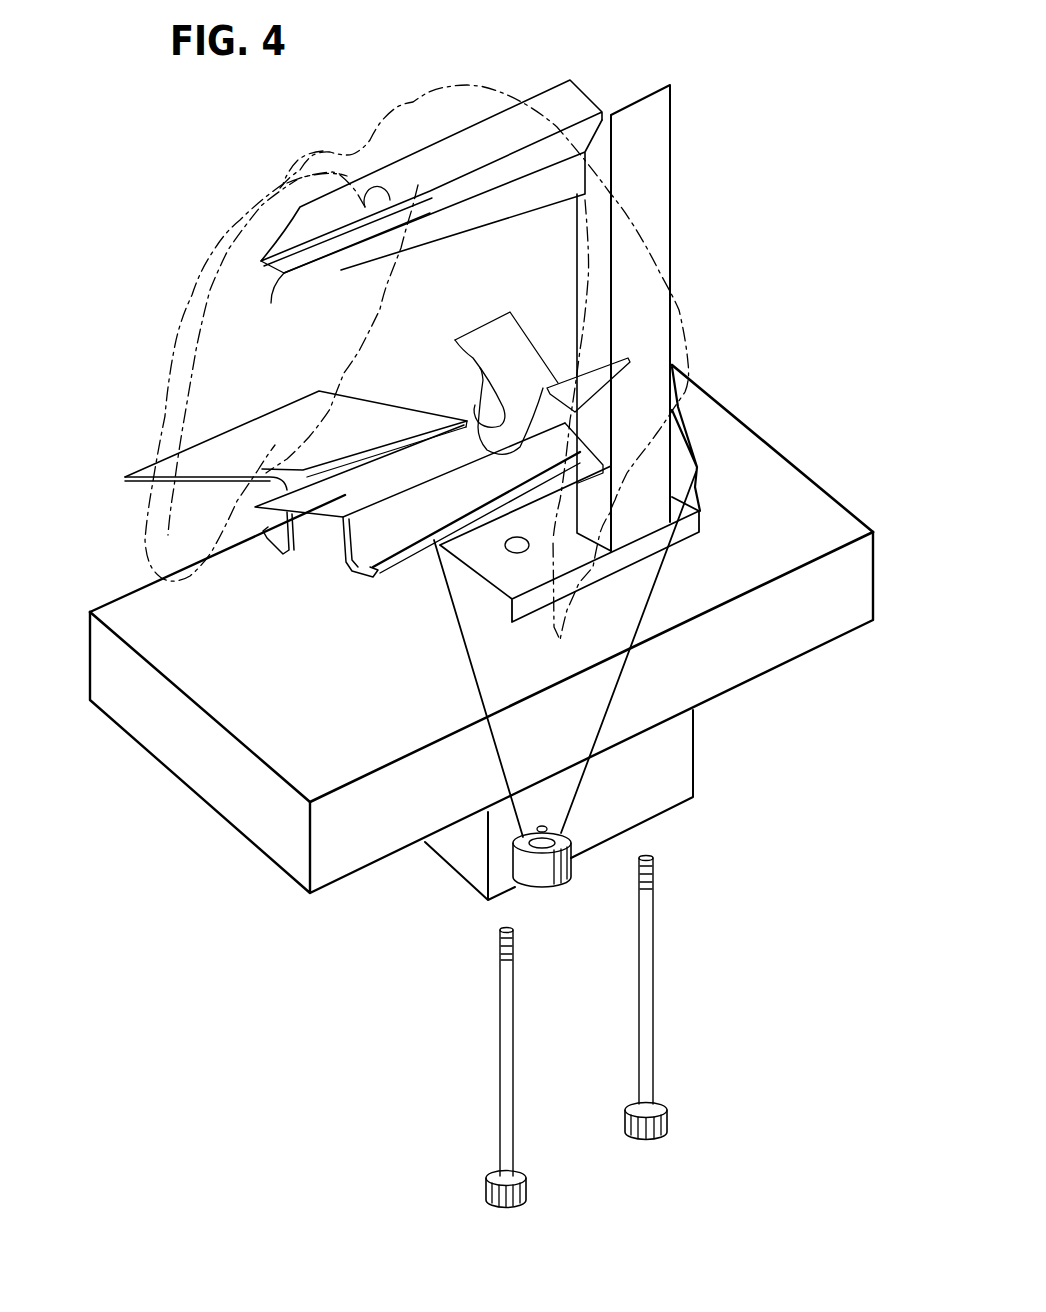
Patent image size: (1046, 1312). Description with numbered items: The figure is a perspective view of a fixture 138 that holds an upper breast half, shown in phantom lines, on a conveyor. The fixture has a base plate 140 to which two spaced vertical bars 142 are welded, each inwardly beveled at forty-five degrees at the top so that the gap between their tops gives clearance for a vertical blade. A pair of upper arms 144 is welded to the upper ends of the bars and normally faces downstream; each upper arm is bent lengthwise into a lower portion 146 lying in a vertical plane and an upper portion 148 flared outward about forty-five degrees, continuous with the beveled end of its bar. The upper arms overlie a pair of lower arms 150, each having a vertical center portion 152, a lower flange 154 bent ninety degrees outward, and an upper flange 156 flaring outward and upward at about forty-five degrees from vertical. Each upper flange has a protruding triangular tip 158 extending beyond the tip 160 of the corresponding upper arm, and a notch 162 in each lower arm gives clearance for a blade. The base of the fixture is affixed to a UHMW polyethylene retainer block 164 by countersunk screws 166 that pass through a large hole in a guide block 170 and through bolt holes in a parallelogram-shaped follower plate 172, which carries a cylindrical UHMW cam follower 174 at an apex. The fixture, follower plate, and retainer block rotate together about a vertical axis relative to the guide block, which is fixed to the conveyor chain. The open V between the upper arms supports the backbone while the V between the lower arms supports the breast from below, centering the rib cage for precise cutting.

The fixture 138 is at (656, 50).
The base plate 140 is at (703, 515).
The vertical bars 142 is at (663, 133).
The upper arms 144 is at (273, 237).
The lower portion 146 is at (462, 232).
The upper portion 148 is at (478, 122).
The lower arms 150 is at (336, 590).
The vertical center portion 152 is at (373, 580).
The lower flange 154 is at (410, 512).
The upper flange 156 is at (265, 440).
The triangular tip 158 is at (125, 478).
The tip 160 is at (271, 303).
The notch 162 is at (462, 357).
The retainer block 164 is at (660, 793).
The countersunk screws 166 is at (655, 1046).
The guide block 170 is at (783, 650).
The follower plate 172 is at (698, 467).
The cam follower 174 is at (550, 888).